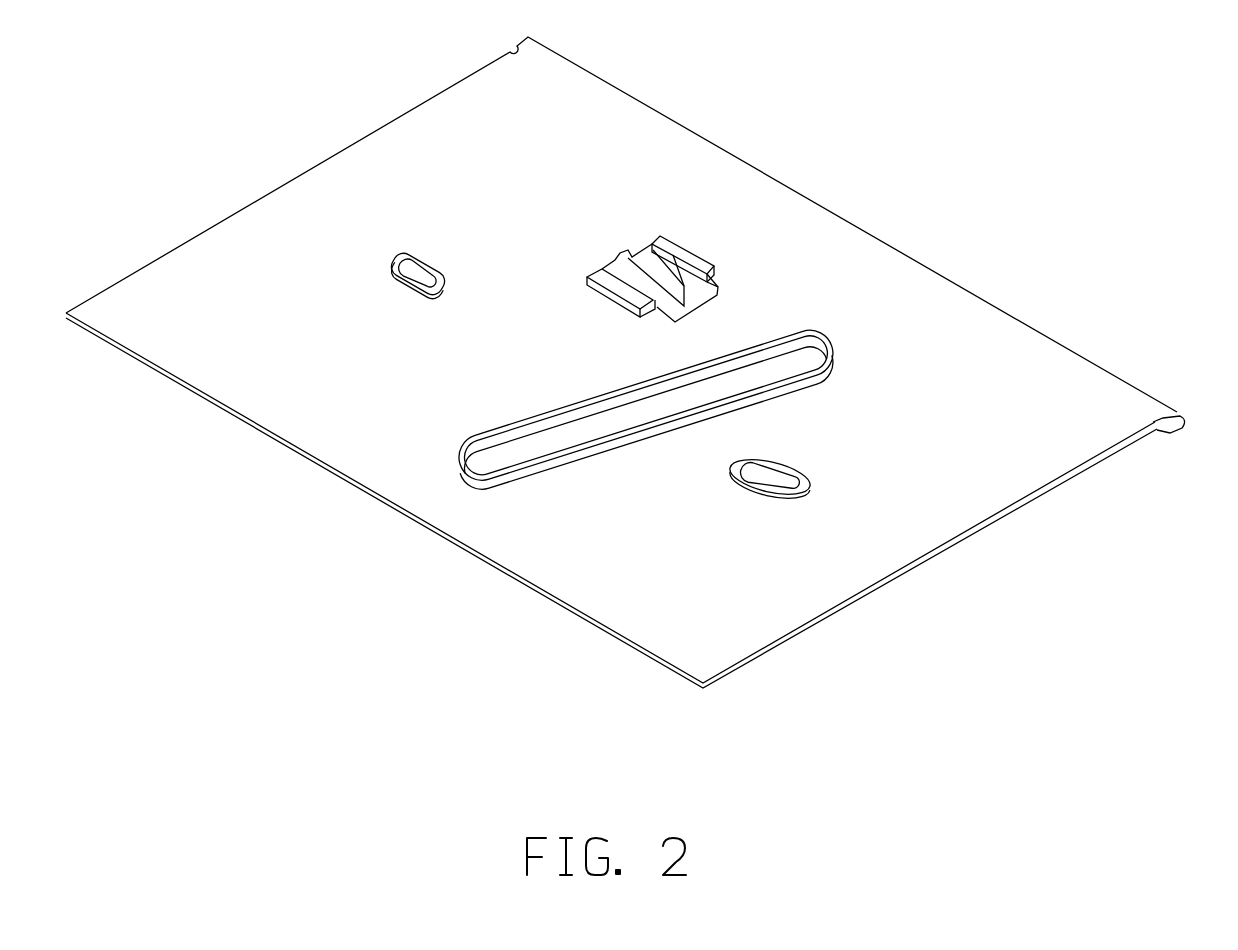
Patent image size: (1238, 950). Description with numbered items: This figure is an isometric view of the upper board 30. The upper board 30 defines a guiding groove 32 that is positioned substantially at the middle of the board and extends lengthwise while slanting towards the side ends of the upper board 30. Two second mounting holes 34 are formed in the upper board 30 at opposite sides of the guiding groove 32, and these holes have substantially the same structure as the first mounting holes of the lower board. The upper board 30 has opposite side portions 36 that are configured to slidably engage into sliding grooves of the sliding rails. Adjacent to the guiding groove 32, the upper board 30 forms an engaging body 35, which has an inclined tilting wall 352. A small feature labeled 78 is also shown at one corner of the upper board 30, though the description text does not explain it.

The upper board 30 is at (953, 217).
The guiding groove 32 is at (528, 450).
The second mounting holes 34 is at (808, 490).
The engaging body 35 is at (648, 260).
The inclined tilting wall 352 is at (677, 282).
The side portions 36 is at (1027, 455).
The bent tab 78 is at (1176, 420).